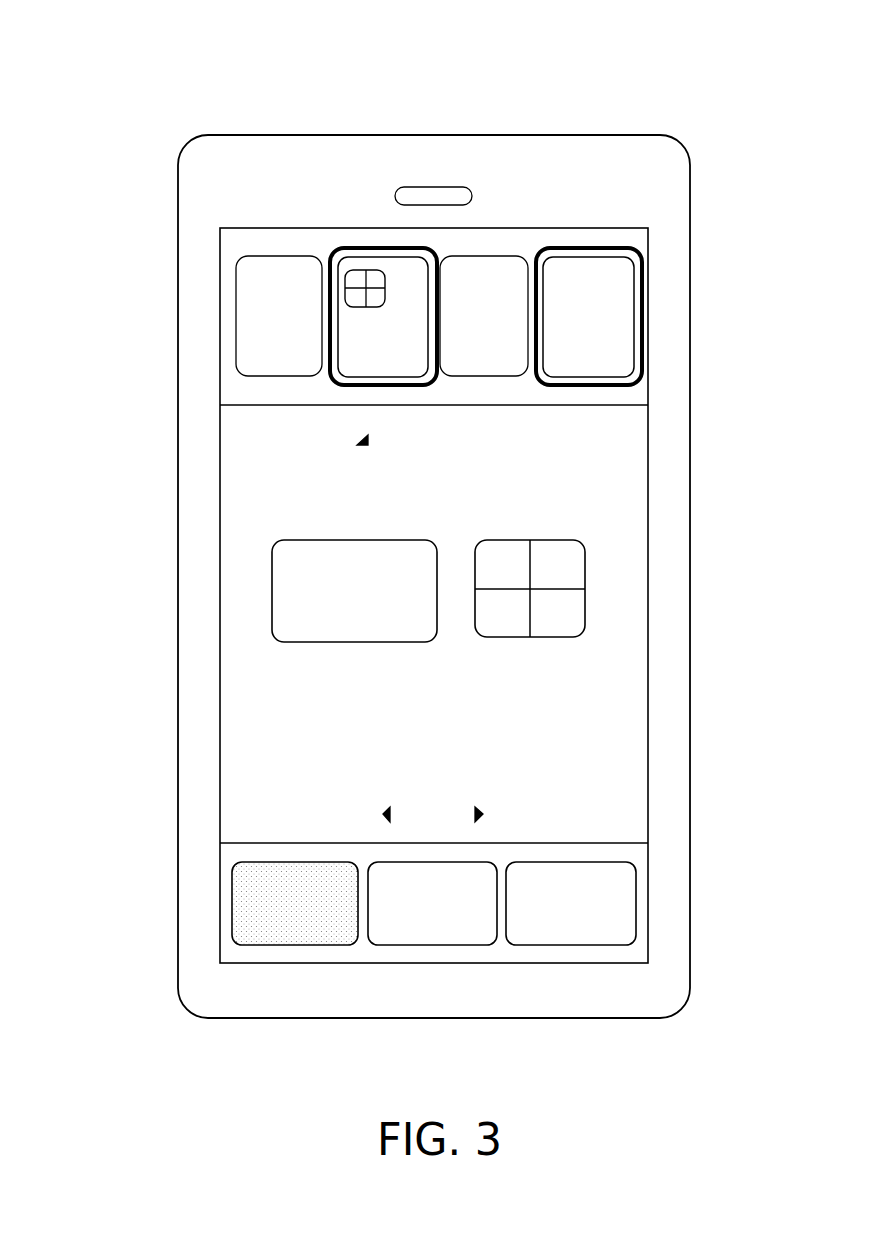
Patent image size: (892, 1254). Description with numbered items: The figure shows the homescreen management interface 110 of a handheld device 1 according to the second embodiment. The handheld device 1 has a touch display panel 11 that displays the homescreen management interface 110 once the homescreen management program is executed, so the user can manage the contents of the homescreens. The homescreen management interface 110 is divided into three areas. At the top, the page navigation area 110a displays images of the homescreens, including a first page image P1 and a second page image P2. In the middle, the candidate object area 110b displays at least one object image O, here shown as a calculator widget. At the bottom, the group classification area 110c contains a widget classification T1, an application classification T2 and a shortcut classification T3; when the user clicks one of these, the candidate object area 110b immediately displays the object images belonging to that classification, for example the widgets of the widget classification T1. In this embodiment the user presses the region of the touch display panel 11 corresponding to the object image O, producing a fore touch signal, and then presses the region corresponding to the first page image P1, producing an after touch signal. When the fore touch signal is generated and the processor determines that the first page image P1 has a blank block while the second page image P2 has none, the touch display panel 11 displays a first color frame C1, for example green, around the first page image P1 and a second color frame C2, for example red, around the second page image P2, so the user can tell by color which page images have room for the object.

The handheld device 1 is at (428, 65).
The touch display panel 11 is at (648, 355).
The homescreen management interface 110 is at (662, 463).
The page navigation area 110a is at (436, 398).
The candidate object area 110b is at (220, 610).
The group classification area 110c is at (383, 912).
The first page image P1 is at (358, 257).
The second page image P2 is at (610, 252).
The first color frame C1 is at (398, 248).
The second color frame C2 is at (555, 248).
The object image O is at (587, 567).
The widget classification T1 is at (310, 945).
The application classification T2 is at (430, 945).
The shortcut classification T3 is at (572, 945).